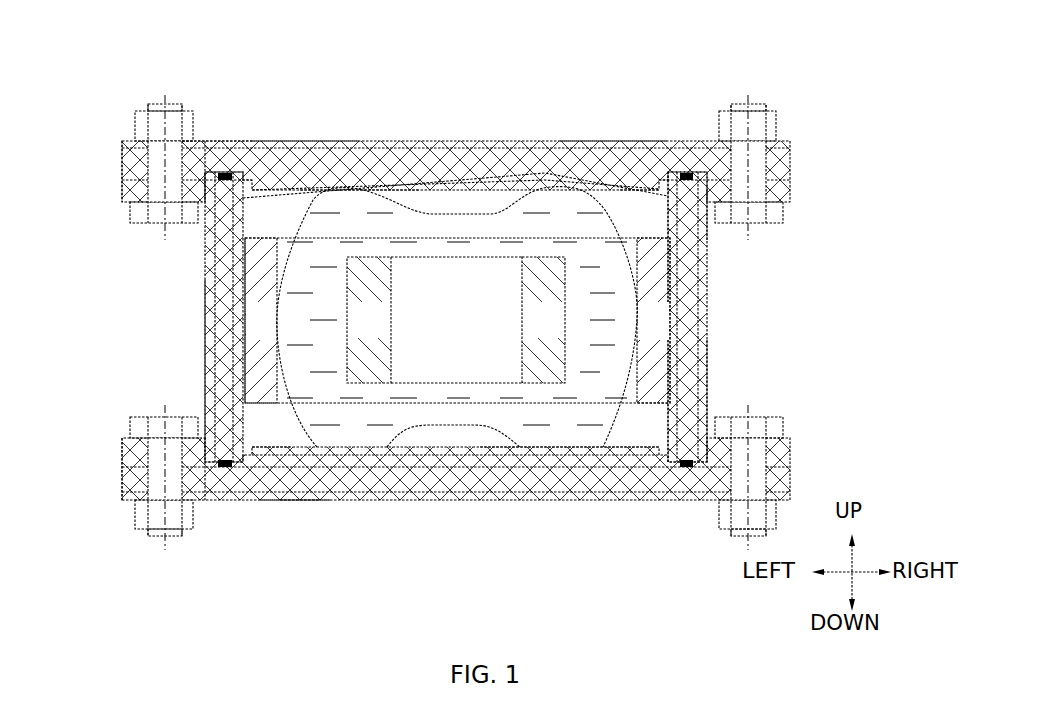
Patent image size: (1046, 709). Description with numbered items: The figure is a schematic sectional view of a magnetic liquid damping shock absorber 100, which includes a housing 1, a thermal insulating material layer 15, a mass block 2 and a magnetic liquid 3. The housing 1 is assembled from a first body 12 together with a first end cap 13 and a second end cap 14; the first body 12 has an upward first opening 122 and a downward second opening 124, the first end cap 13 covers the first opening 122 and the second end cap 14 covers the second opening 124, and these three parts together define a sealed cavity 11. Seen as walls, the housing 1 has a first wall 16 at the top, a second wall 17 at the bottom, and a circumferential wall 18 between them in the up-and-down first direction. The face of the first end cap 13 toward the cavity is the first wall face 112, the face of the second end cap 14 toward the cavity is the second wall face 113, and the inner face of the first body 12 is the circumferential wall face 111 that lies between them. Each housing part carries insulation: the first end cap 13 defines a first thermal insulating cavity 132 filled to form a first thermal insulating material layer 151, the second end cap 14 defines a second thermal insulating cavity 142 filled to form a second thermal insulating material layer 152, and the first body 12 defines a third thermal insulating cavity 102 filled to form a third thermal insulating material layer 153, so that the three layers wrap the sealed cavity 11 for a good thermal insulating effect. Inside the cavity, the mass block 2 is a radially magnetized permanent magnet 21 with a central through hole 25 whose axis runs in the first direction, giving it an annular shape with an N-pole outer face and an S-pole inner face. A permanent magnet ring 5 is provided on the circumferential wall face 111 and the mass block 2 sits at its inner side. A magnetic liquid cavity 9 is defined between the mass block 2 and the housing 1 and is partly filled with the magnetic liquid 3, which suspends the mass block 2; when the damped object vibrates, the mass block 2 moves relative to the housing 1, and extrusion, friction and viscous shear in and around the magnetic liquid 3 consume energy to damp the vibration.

The magnetic liquid damping shock absorber 100 is at (128, 62).
The housing 1 is at (706, 315).
The sealed cavity 11 is at (640, 435).
The circumferential wall face 111 is at (690, 356).
The first wall face 112 is at (490, 180).
The second wall face 113 is at (312, 470).
The first body 12 is at (203, 267).
The first end cap 13 is at (128, 162).
The second end cap 14 is at (127, 487).
The first thermal insulating cavity 132 is at (206, 150).
The first opening 122 is at (639, 197).
The second opening 124 is at (258, 442).
The second thermal insulating cavity 142 is at (300, 494).
The thermal insulating material layer 15 is at (397, 319).
The first thermal insulating material layer 151 is at (503, 103).
The second thermal insulating material layer 152 is at (660, 553).
The third thermal insulating material layer 153 is at (222, 388).
The first wall 16 is at (600, 145).
The second wall 17 is at (290, 502).
The circumferential wall 18 is at (686, 415).
The third thermal insulating cavity 102 is at (682, 377).
The magnetic liquid cavity 9 is at (660, 226).
The magnetic liquid 3 is at (300, 150).
The permanent magnet ring 5 is at (207, 309).
The mass block 2 is at (457, 380).
The permanent magnet 21 is at (370, 338).
The central through hole 25 is at (460, 357).